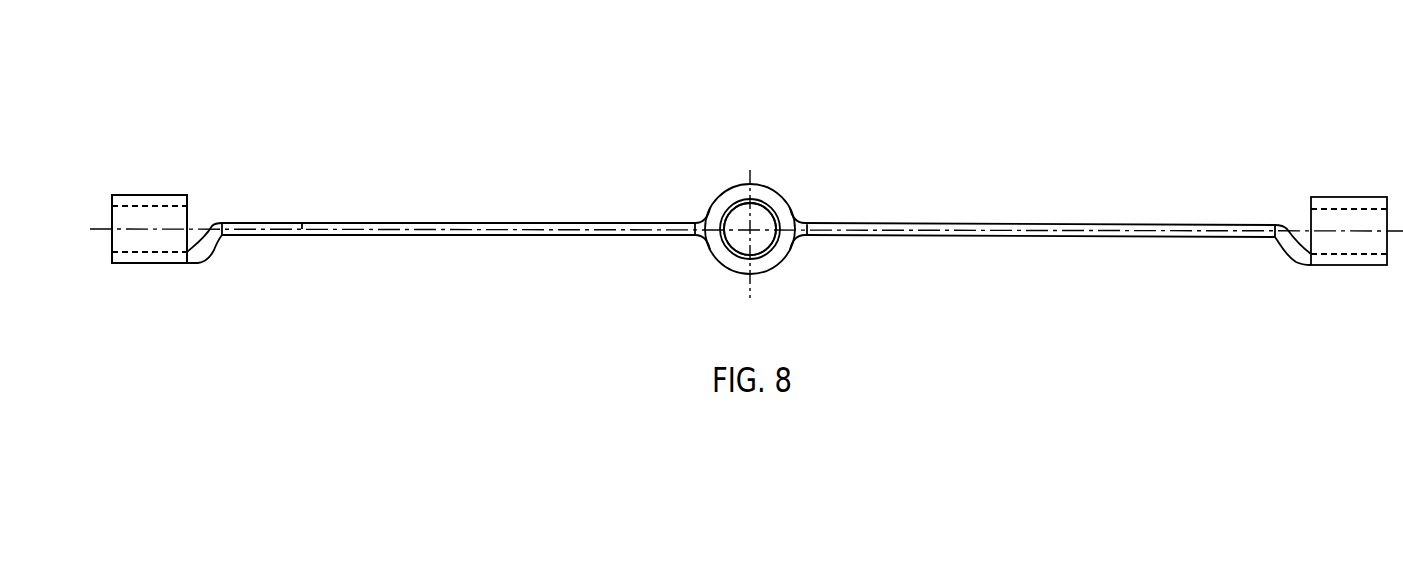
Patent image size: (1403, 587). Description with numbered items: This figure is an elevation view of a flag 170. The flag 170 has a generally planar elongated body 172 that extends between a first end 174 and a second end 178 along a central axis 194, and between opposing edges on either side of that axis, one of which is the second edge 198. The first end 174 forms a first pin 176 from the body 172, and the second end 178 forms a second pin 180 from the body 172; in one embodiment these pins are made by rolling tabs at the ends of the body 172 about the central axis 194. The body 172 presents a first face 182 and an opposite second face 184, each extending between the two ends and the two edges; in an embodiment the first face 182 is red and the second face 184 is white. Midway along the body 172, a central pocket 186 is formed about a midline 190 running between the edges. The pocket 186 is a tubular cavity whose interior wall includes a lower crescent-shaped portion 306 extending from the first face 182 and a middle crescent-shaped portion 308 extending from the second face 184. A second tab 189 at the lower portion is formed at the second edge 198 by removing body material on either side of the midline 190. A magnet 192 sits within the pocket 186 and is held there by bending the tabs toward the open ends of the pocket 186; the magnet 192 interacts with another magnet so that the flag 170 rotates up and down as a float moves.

The flag 170 is at (1013, 124).
The elongated body 172 is at (1387, 265).
The first end 174 is at (240, 306).
The first pin 176 is at (150, 264).
The second end 178 is at (1252, 282).
The second pin 180 is at (1341, 200).
The first face 182 is at (355, 221).
The second face 184 is at (396, 237).
The central pocket 186 is at (803, 265).
The second tab 189 is at (742, 196).
The midline 190 is at (751, 228).
The magnet 192 is at (738, 241).
The central axis 194 is at (140, 230).
The second edge 198 is at (584, 232).
The lower crescent-shaped portion 306 is at (786, 213).
The middle crescent-shaped portion 308 is at (767, 262).